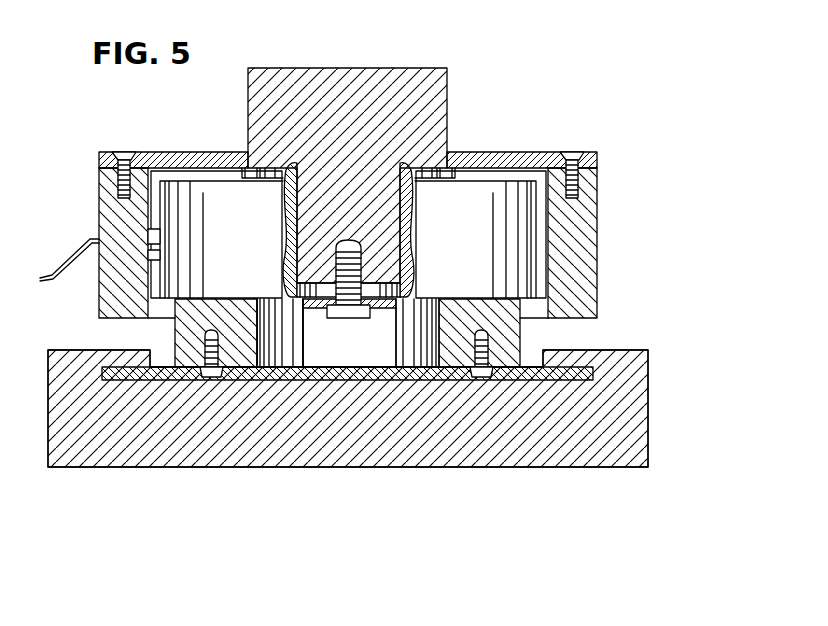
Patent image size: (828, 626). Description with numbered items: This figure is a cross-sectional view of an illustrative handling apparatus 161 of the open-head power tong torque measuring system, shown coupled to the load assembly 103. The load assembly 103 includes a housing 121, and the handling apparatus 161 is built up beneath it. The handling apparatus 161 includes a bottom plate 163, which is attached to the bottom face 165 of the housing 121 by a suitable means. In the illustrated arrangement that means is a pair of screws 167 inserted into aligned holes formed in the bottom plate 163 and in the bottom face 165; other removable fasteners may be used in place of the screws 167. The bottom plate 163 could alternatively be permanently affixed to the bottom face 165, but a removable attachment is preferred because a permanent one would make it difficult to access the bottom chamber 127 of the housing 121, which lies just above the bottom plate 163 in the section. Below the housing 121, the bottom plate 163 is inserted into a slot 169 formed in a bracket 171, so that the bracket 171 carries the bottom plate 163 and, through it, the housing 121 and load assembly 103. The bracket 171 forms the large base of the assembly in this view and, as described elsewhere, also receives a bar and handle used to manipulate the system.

The load assembly 103 is at (465, 102).
The housing 121 is at (101, 201).
The bottom chamber 127 is at (373, 347).
The handling apparatus 161 is at (648, 408).
The bottom plate 163 is at (273, 340).
The bottom face 165 is at (200, 372).
The screws 167 is at (195, 352).
The slot 169 is at (567, 380).
The bracket 171 is at (352, 437).